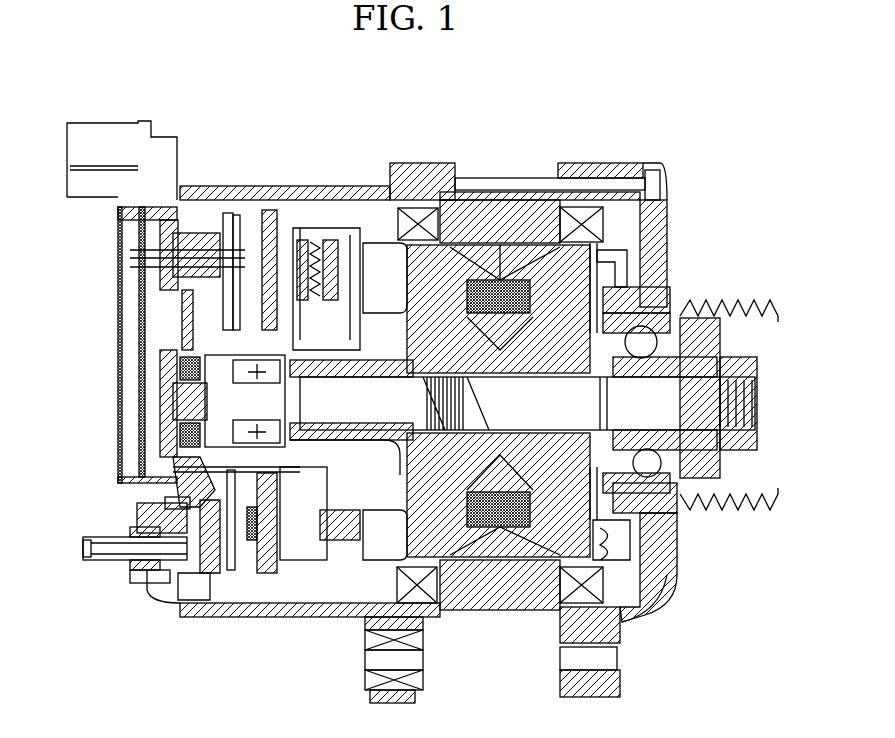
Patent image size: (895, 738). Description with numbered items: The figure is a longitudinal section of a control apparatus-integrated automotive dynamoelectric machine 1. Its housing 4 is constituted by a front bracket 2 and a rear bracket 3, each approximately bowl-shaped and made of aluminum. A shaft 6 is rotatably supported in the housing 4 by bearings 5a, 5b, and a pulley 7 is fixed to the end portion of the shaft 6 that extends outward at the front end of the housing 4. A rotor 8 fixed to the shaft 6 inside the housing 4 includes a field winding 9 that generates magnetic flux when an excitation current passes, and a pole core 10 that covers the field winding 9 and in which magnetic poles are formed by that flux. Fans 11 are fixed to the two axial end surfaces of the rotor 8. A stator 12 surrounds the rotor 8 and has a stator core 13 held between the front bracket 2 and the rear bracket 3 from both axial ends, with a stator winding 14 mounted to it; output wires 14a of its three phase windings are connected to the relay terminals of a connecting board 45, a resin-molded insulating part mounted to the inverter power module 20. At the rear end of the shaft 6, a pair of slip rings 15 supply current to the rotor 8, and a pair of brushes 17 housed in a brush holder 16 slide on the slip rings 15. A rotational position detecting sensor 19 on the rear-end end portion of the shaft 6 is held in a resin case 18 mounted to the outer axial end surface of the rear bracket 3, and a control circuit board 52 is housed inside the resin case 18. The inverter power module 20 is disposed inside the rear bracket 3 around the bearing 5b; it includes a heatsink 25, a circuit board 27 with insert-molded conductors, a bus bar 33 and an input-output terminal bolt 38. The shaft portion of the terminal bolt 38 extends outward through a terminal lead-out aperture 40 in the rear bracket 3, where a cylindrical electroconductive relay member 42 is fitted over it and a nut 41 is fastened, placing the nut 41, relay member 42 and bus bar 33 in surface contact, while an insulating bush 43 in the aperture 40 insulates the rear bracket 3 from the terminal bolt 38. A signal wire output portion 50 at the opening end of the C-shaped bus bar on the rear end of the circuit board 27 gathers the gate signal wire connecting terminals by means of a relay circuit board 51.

The control apparatus-integrated automotive dynamoelectric machine 1 is at (94, 69).
The front bracket 2 is at (667, 237).
The rear bracket 3 is at (318, 190).
The housing 4 is at (635, 617).
The bearing 5a is at (677, 323).
The bearing 5b is at (247, 373).
The shaft 6 is at (695, 405).
The pulley 7 is at (747, 303).
The rotor 8 is at (498, 332).
The field winding 9 is at (500, 277).
The pole core 10 is at (528, 280).
The fans 11 is at (620, 537).
The stator 12 is at (500, 445).
The stator core 13 is at (498, 600).
The stator winding 14 is at (560, 600).
The output wires 14a is at (436, 615).
The slip rings 15 is at (320, 398).
The brush holder 16 is at (307, 228).
The brushes 17 is at (342, 300).
The resin case 18 is at (133, 200).
The rotational position detecting sensor 19 is at (173, 380).
The inverter power module 20 is at (249, 582).
The heatsink 25 is at (268, 593).
The circuit board 27 is at (235, 593).
The bus bar 33 is at (182, 585).
The input-output terminal bolt 38 is at (83, 538).
The terminal lead-out aperture 40 is at (173, 507).
The nut 41 is at (128, 530).
The relay member 42 is at (157, 583).
The insulating bush 43 is at (133, 508).
The connecting board 45 is at (387, 580).
The signal wire output portion 50 is at (202, 233).
The relay circuit board 51 is at (228, 230).
The control circuit board 52 is at (140, 324).